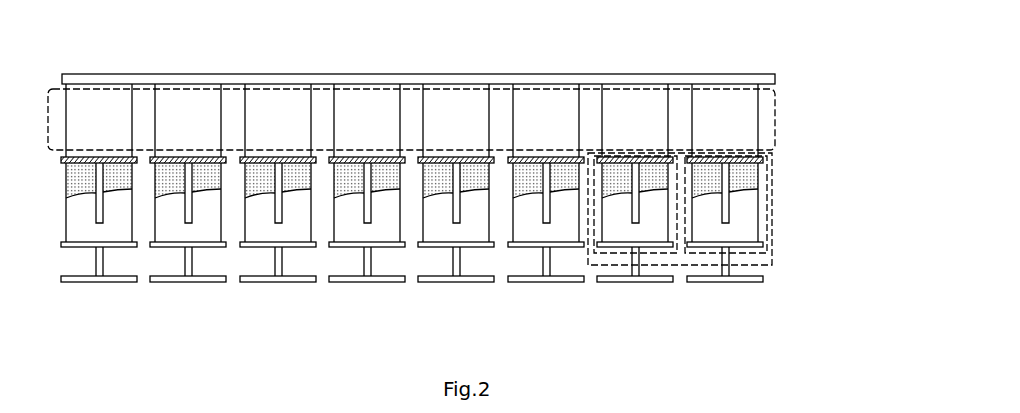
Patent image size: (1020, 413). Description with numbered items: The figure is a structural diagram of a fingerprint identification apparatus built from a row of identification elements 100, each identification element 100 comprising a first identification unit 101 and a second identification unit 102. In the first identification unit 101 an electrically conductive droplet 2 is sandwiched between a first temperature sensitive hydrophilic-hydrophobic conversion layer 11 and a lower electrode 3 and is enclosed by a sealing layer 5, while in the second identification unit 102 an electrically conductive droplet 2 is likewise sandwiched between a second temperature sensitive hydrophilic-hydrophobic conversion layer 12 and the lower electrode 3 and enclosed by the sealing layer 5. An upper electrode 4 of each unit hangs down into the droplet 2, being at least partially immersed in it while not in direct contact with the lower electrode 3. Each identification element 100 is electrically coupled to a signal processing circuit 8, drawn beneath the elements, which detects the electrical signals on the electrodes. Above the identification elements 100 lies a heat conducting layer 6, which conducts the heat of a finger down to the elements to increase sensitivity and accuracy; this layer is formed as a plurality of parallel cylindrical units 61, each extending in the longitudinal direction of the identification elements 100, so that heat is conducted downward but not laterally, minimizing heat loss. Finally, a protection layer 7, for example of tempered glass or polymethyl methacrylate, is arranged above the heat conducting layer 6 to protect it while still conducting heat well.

The protection layer 7 is at (775, 80).
The heat conducting layer 6 is at (775, 107).
The cylindrical units 61 is at (760, 125).
The first temperature sensitive hydrophilic-hydrophobic conversion layer 11 is at (640, 157).
The second temperature sensitive hydrophilic-hydrophobic conversion layer 12 is at (764, 162).
The electrically conductive droplet 2 is at (760, 177).
The upper electrode 4 is at (727, 202).
The sealing layer 5 is at (760, 226).
The lower electrode 3 is at (764, 244).
The signal processing circuit 8 is at (767, 278).
The identification element 100 is at (679, 265).
The first identification unit 101 is at (594, 255).
The second identification unit 102 is at (767, 265).